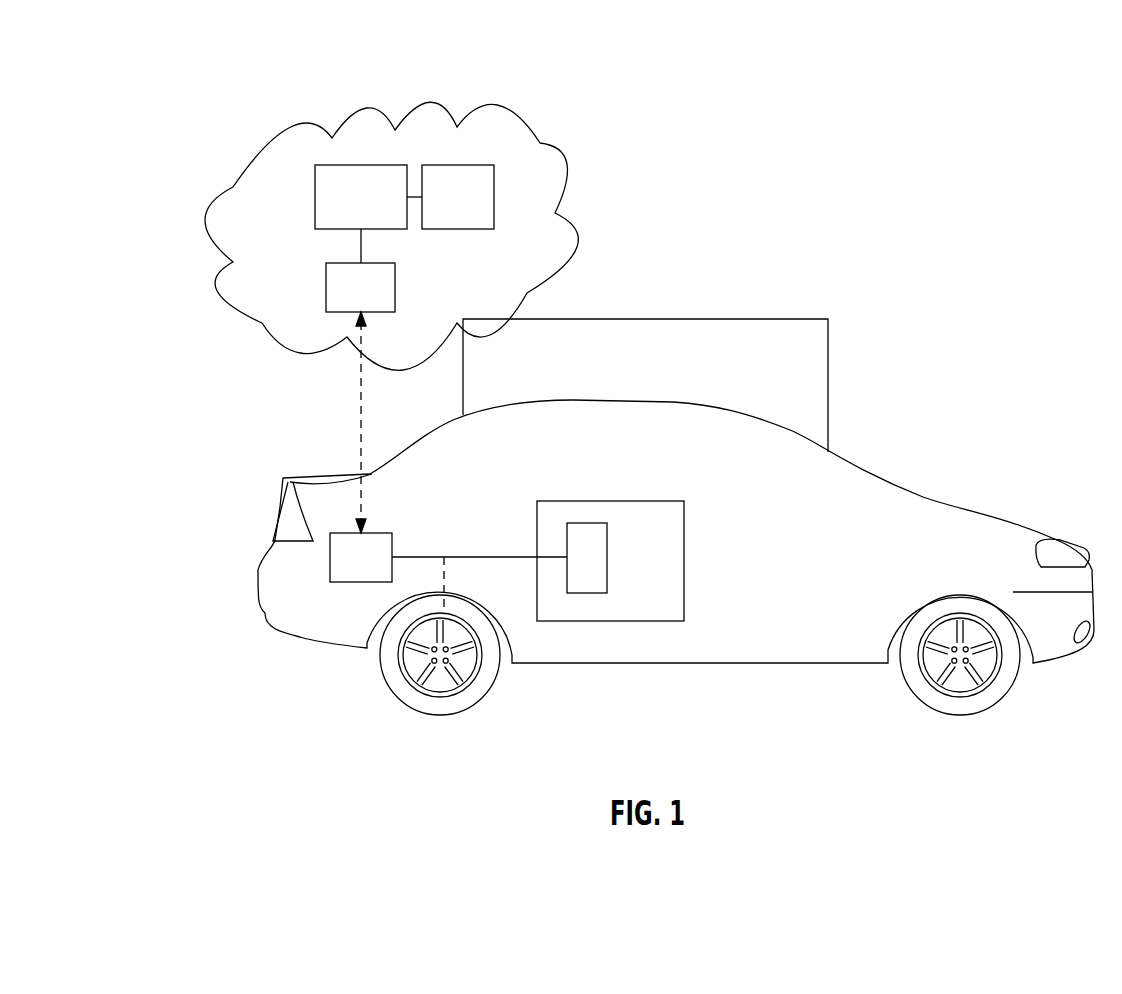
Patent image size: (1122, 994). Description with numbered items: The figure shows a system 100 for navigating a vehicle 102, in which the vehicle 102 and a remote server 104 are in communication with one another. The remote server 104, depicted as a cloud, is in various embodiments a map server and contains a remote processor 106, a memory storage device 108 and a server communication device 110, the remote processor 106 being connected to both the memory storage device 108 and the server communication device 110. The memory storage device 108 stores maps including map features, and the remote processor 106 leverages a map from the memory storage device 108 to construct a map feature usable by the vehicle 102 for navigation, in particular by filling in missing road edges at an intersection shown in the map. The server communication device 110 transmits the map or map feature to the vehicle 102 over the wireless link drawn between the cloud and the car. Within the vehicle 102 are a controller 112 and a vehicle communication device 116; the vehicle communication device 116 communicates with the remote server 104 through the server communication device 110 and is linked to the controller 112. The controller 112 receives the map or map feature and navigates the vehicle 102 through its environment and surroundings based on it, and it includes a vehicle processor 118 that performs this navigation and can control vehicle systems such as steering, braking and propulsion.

The system 100 is at (1014, 123).
The vehicle 102 is at (803, 298).
The remote server 104 is at (370, 110).
The remote processor 106 is at (315, 197).
The memory storage device 108 is at (495, 187).
The server communication device 110 is at (326, 287).
The controller 112 is at (592, 501).
The vehicle communication device 116 is at (330, 560).
The vehicle processor 118 is at (585, 523).